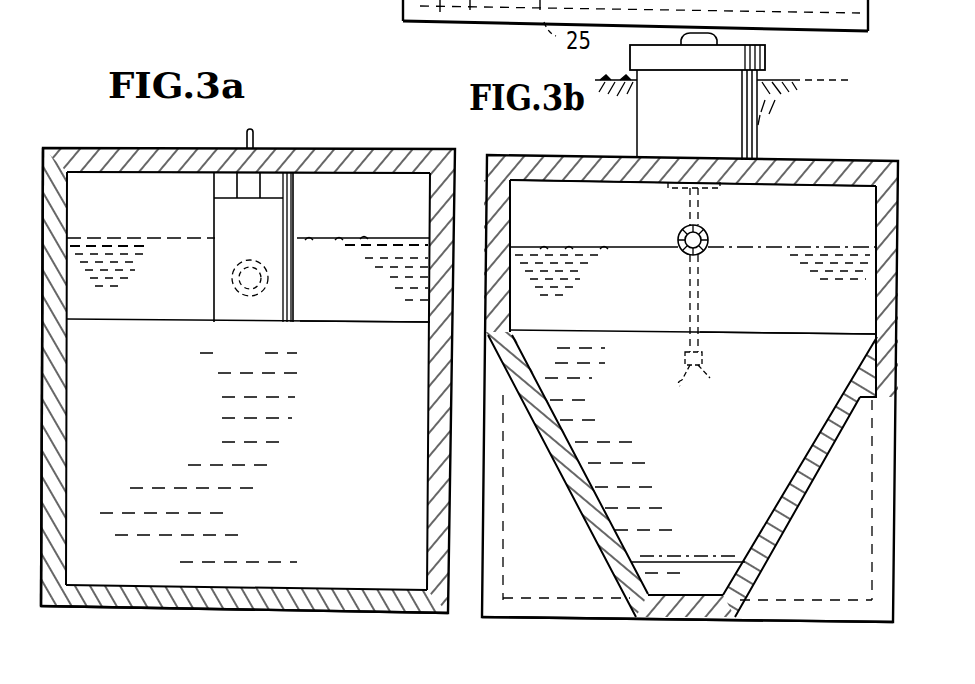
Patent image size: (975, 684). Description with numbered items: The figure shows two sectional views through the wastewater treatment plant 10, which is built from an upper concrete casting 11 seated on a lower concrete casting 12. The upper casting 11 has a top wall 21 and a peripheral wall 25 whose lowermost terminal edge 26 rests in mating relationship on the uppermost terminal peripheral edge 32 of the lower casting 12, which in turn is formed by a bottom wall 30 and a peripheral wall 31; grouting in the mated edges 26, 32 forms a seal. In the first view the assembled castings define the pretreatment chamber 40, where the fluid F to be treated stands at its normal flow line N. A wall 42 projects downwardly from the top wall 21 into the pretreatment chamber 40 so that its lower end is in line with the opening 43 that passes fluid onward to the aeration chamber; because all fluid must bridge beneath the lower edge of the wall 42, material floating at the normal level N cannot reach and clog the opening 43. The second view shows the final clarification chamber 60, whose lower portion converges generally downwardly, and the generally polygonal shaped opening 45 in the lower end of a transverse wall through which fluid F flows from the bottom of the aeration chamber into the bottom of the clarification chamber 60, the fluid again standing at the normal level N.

In FIG. 3A, the wastewater treatment plant 10 is at (330, 110).
In FIG. 3B, the wastewater treatment plant 10 is at (836, 78).
In FIG. 3A, the upper concrete casting 11 is at (378, 146).
In FIG. 3B, the upper concrete casting 11 is at (799, 158).
In FIG. 3A, the lower concrete casting 12 is at (288, 618).
In FIG. 3B, the lower concrete casting 12 is at (557, 622).
In FIG. 3A, the top wall 21 is at (128, 170).
In FIG. 3B, the top wall 21 is at (558, 180).
In FIG. 3A, the peripheral wall 25 is at (62, 228).
In FIG. 3B, the peripheral wall 25 is at (485, 258).
In FIG. 3A, the lowermost terminal edge 26 is at (60, 326).
In FIG. 3B, the lowermost terminal edge 26 is at (510, 338).
In FIG. 3A, the bottom wall 30 is at (163, 608).
In FIG. 3B, the bottom wall 30 is at (603, 608).
In FIG. 3A, the peripheral wall 31 is at (58, 455).
In FIG. 3B, the peripheral wall 31 is at (512, 388).
In FIG. 3A, the uppermost terminal peripheral edge 32 is at (444, 328).
In FIG. 3B, the uppermost terminal peripheral edge 32 is at (878, 335).
In FIG. 3A, the pretreatment chamber 40 is at (192, 442).
In FIG. 3A, the wall 42 is at (254, 242).
In FIG. 3A, the opening 43 is at (247, 300).
In FIG. 3B, the polygonal shaped opening 45 is at (688, 564).
In FIG. 3B, the final clarification chamber 60 is at (653, 412).
In FIG. 3A, the normal flow line N is at (322, 238).
In FIG. 3B, the normal flow line N is at (628, 244).
In FIG. 3A, the fluid F is at (318, 478).
In FIG. 3B, the fluid F is at (635, 460).